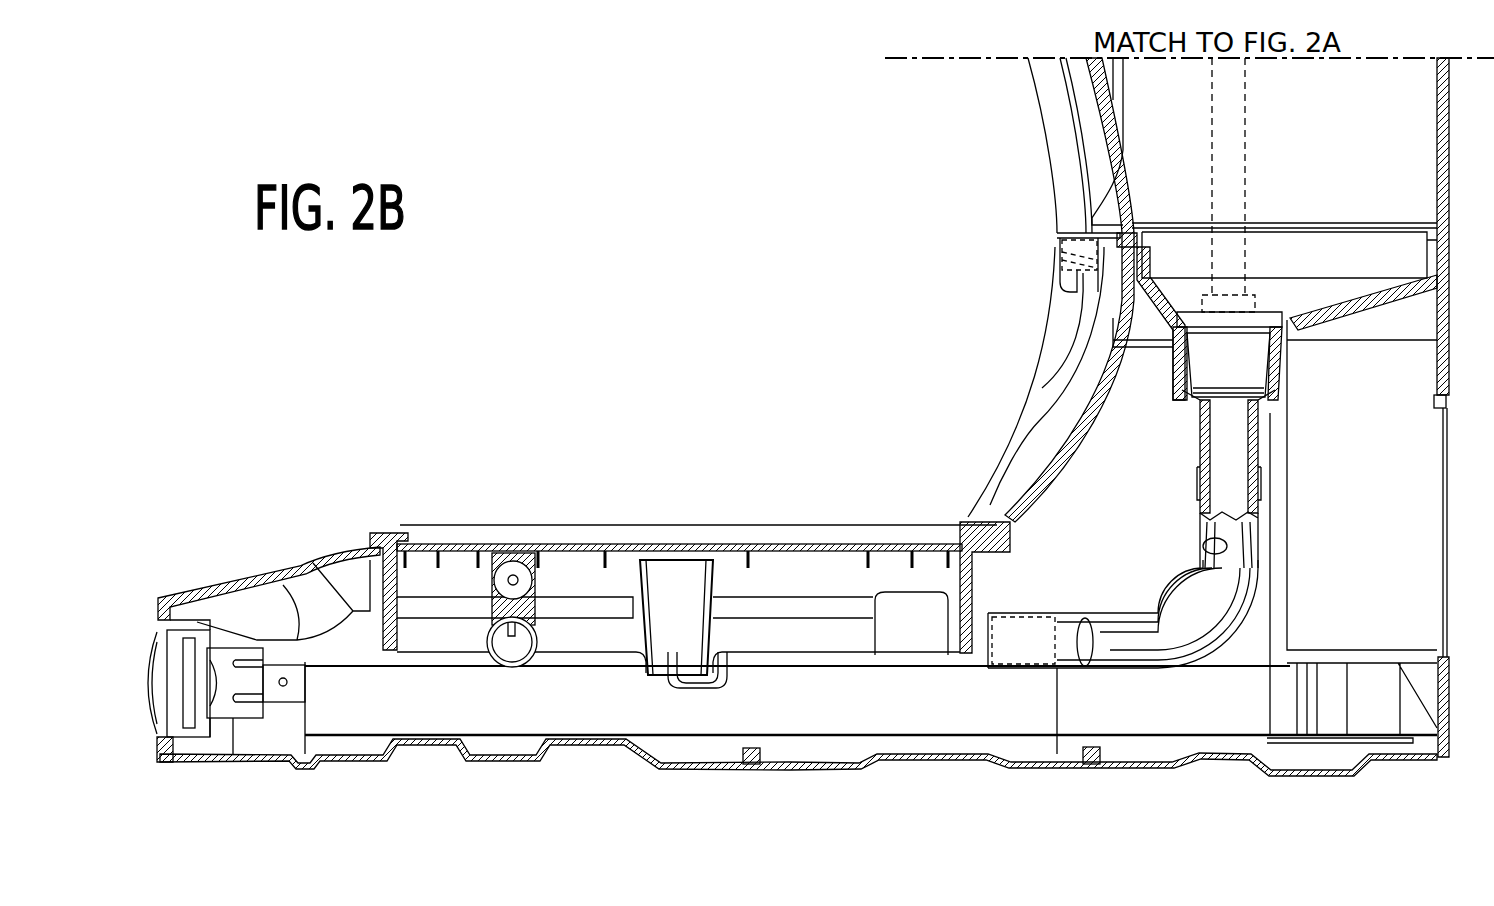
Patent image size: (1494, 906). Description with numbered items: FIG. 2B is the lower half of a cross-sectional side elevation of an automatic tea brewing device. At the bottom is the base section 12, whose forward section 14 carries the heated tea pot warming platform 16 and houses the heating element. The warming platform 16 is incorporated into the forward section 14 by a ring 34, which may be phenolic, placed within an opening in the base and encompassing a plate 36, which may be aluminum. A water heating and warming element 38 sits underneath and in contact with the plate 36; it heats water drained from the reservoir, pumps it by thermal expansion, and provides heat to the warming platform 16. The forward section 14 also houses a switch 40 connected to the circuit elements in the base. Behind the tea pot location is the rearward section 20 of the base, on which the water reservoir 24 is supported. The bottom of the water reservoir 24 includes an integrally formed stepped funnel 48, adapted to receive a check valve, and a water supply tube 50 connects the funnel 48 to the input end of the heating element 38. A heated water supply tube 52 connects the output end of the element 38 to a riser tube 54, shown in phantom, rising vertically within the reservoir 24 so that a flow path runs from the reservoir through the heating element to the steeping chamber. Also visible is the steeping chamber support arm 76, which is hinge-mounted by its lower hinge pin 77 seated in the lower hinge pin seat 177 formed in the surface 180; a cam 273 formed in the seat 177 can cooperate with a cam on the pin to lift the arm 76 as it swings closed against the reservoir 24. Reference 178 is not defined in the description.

The base section 12 is at (683, 755).
The forward section 14 is at (228, 762).
The tea pot warming platform 16 is at (553, 522).
The rearward section 20 is at (1452, 333).
The water reservoir 24 is at (1437, 160).
The ring 34 is at (395, 530).
The plate 36 is at (650, 542).
The water heating and warming element 38 is at (485, 607).
The switch 40 is at (258, 728).
The stepped funnel 48 is at (1262, 442).
The water supply tube 50 is at (1245, 537).
The heated water supply tube 52 is at (1168, 612).
The riser tube 54 is at (1242, 134).
The steeping chamber support arm 76 is at (1062, 128).
The lower hinge pin 77 is at (1058, 244).
The lower hinge pin seat 177 is at (1068, 287).
The surface 178 is at (1040, 385).
The surface 180 is at (1123, 148).
The cam 273 is at (1065, 330).